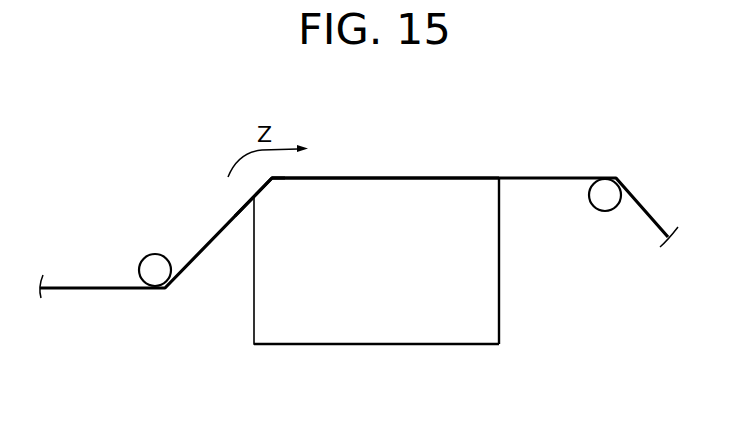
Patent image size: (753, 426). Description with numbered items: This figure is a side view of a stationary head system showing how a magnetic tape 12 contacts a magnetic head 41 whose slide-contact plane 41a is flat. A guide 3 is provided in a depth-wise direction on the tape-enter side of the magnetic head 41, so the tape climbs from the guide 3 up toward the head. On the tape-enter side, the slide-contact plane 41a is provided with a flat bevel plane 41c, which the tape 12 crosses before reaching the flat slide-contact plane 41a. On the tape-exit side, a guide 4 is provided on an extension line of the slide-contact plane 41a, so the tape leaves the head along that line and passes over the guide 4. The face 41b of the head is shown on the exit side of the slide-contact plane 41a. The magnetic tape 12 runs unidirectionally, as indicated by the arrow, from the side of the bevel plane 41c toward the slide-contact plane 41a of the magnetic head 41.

The guide 3 is at (153, 262).
The guide 4 is at (607, 189).
The magnetic tape 12 is at (210, 247).
The magnetic head 41 is at (364, 231).
The slide-contact plane 41a is at (420, 177).
The side surface of block 41b is at (500, 177).
The bevel plane 41c is at (268, 183).